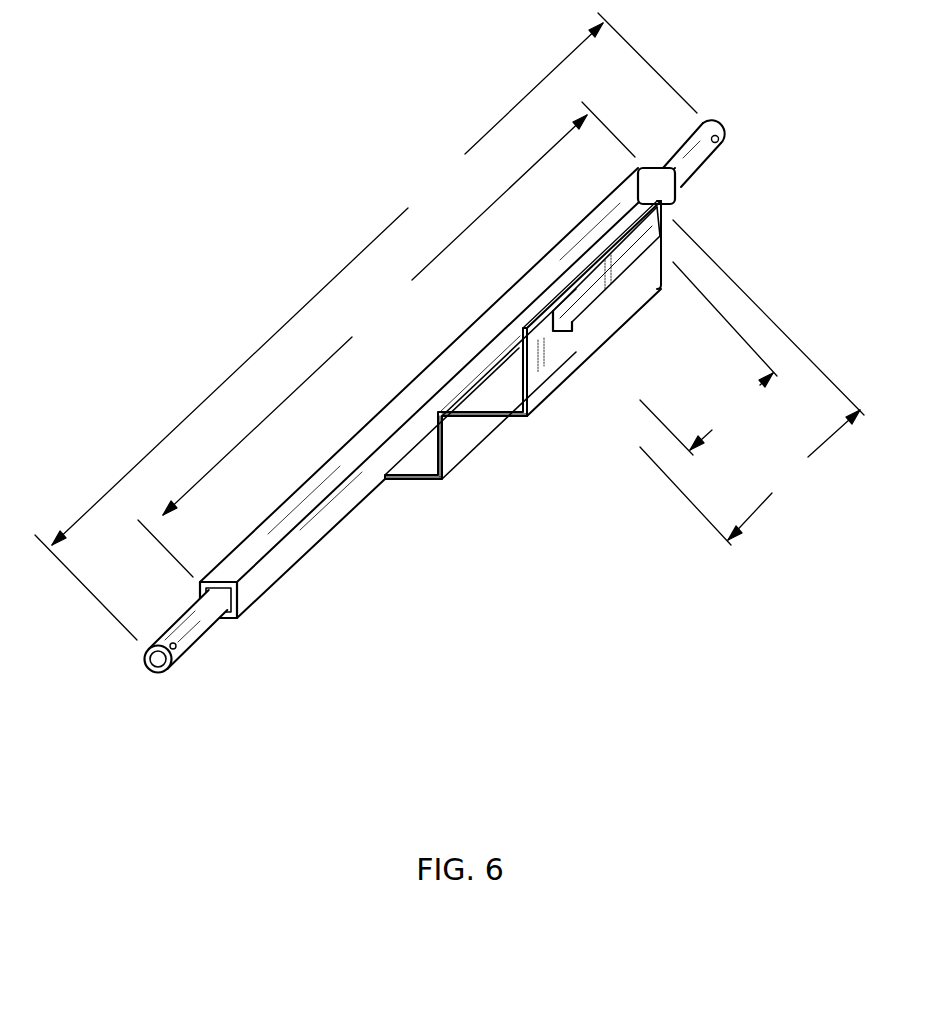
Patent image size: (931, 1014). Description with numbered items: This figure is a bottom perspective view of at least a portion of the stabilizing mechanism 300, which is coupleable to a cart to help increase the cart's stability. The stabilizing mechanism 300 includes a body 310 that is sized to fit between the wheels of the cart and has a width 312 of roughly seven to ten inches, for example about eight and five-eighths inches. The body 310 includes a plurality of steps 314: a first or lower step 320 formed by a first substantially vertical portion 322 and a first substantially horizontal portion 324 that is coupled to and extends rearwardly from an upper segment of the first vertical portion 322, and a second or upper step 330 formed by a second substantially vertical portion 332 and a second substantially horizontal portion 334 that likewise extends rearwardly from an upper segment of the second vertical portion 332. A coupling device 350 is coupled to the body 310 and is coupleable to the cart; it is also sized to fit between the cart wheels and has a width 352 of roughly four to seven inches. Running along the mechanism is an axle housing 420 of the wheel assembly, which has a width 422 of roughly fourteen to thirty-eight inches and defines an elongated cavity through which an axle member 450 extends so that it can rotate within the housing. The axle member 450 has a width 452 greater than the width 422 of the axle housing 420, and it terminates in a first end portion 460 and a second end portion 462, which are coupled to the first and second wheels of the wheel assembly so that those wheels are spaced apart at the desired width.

The stabilizing mechanism 300 is at (585, 606).
The body 310 is at (568, 400).
The width 312 is at (752, 382).
The steps 314 is at (437, 497).
The first step 320 is at (628, 316).
The first vertical portion 322 is at (655, 278).
The first horizontal portion 324 is at (490, 385).
The second step 330 is at (405, 497).
The second vertical portion 332 is at (432, 437).
The second horizontal portion 334 is at (406, 468).
The coupling device 350 is at (657, 241).
The width 352 is at (708, 358).
The axle housing 420 is at (255, 604).
The width 422 is at (386, 339).
The axle member 450 is at (189, 680).
The width 452 is at (366, 326).
The first end portion 460 is at (150, 692).
The second end portion 462 is at (732, 123).